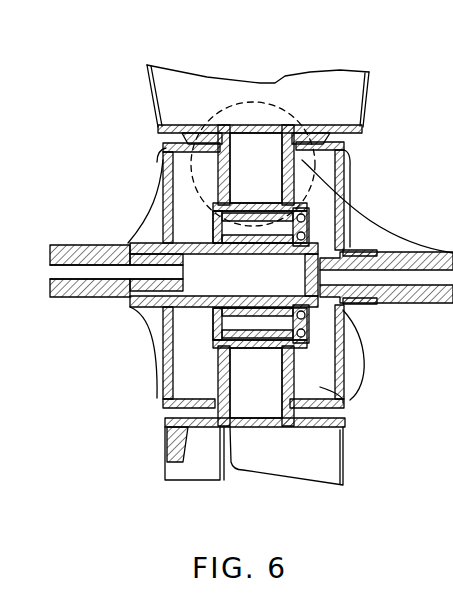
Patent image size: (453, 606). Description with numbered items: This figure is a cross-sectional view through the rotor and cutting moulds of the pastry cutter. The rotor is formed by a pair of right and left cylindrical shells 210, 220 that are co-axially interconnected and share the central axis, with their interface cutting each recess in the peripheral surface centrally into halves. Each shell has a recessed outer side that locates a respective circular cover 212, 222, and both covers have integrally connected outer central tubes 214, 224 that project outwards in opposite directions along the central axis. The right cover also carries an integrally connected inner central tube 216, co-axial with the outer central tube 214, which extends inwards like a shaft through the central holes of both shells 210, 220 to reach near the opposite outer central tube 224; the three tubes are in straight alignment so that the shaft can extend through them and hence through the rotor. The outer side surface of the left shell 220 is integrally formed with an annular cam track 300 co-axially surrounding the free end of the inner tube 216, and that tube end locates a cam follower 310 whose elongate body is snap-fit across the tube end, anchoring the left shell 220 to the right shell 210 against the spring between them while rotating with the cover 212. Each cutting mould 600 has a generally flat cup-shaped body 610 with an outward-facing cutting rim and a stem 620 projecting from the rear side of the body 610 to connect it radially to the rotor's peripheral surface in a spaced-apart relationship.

The cutting mould 600 is at (128, 118).
The cup-shaped body 610 is at (180, 92).
The stem 620 is at (256, 275).
The right cylindrical shell 210 is at (192, 152).
The left cylindrical shell 220 is at (317, 143).
The circular cover 212 is at (160, 148).
The circular cover 222 is at (350, 152).
The outer central tube 214 is at (66, 297).
The outer central tube 224 is at (415, 303).
The inner central tube 216 is at (193, 302).
The cam follower 310 is at (300, 317).
The annular cam track 300 is at (343, 403).